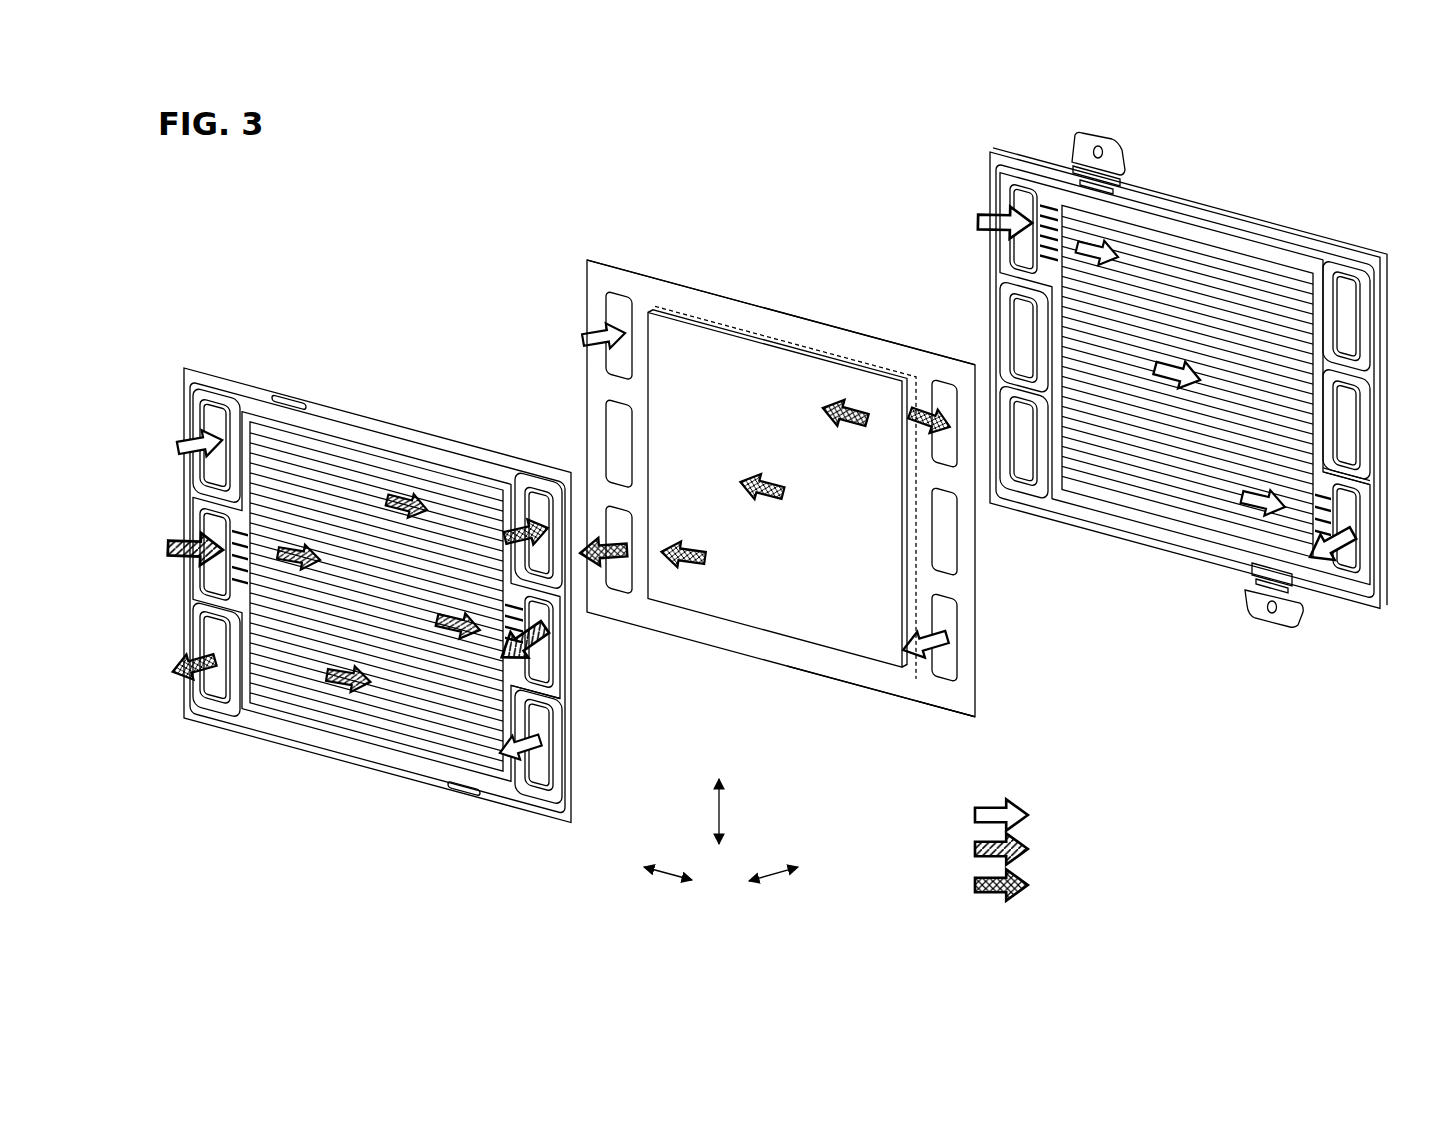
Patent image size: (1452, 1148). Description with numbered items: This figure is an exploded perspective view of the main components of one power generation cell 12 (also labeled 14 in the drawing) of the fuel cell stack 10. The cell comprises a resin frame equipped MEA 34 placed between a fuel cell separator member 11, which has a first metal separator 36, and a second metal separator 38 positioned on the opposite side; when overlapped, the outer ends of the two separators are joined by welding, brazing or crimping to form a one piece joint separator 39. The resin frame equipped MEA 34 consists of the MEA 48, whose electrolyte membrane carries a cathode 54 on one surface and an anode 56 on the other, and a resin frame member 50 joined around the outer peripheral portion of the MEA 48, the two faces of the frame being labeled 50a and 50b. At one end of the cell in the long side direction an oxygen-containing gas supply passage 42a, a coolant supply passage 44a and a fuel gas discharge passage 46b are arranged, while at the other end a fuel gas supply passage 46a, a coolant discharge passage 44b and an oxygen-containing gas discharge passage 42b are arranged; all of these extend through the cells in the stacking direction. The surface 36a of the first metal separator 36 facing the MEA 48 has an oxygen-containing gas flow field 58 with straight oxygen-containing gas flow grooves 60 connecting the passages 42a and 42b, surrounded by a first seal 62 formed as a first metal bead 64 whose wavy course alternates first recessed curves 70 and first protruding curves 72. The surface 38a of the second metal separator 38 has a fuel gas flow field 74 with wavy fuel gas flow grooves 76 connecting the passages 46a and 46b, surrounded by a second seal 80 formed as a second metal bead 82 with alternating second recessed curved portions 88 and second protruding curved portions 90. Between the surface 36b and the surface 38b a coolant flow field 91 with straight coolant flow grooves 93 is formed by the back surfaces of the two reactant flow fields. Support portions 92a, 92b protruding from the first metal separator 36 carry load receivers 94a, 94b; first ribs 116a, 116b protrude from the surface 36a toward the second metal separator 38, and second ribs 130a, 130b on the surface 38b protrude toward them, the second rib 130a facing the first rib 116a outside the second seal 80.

The fuel cell stack 10 is at (320, 197).
The fuel cell separator member 11 is at (987, 150).
The power generation cell 12 is at (757, 226).
The membrane electrode assembly 14 is at (775, 464).
The resin frame equipped MEA 34 is at (637, 226).
The first metal separator 36 is at (1288, 240).
The surface of first metal separator 36a is at (1360, 468).
The surface of first metal separator 36b is at (1362, 488).
The second metal separator 38 is at (190, 383).
The surface of second metal separator 38a is at (560, 712).
The surface of second metal separator 38b is at (556, 689).
The joint separator 39 is at (1372, 177).
The oxygen-containing gas supply passage 42a is at (210, 418).
The oxygen-containing gas discharge passage 42b is at (548, 768).
The coolant supply passage 44a is at (210, 530).
The coolant discharge passage 44b is at (547, 660).
The fuel gas supply passage 46a is at (541, 503).
The fuel gas discharge passage 46b is at (210, 638).
The MEA 48 is at (651, 301).
The resin frame member 50 is at (697, 302).
The first surface of frame member 50a is at (928, 686).
The second surface of frame member 50b is at (900, 683).
The cathode 54 is at (884, 368).
The anode 56 is at (781, 362).
The oxygen-containing gas flow field 58 is at (1187, 396).
The oxygen-containing gas flow grooves 60 is at (1140, 492).
The first seal 62 is at (1185, 344).
The first metal bead 64 is at (1260, 235).
The first recessed curves 70 is at (1163, 215).
The first protruding curves 72 is at (1237, 233).
The fuel gas flow field 74 is at (377, 657).
The fuel gas flow grooves 76 is at (363, 702).
The second seal 80 is at (418, 586).
The second metal bead 82 is at (418, 594).
The second recessed curved portions 88 is at (331, 423).
The second protruding curved portions 90 is at (395, 440).
The coolant flow field 91 is at (376, 606).
The coolant flow grooves 93 is at (277, 695).
The support portion 92a is at (1127, 182).
The support portion 92b is at (1245, 574).
The load receiver 94a is at (1082, 145).
The load receiver 94b is at (1280, 622).
The first rib 116a is at (1090, 187).
The first rib 116b is at (1262, 577).
The second rib 130a is at (282, 398).
The second rib 130b is at (472, 795).